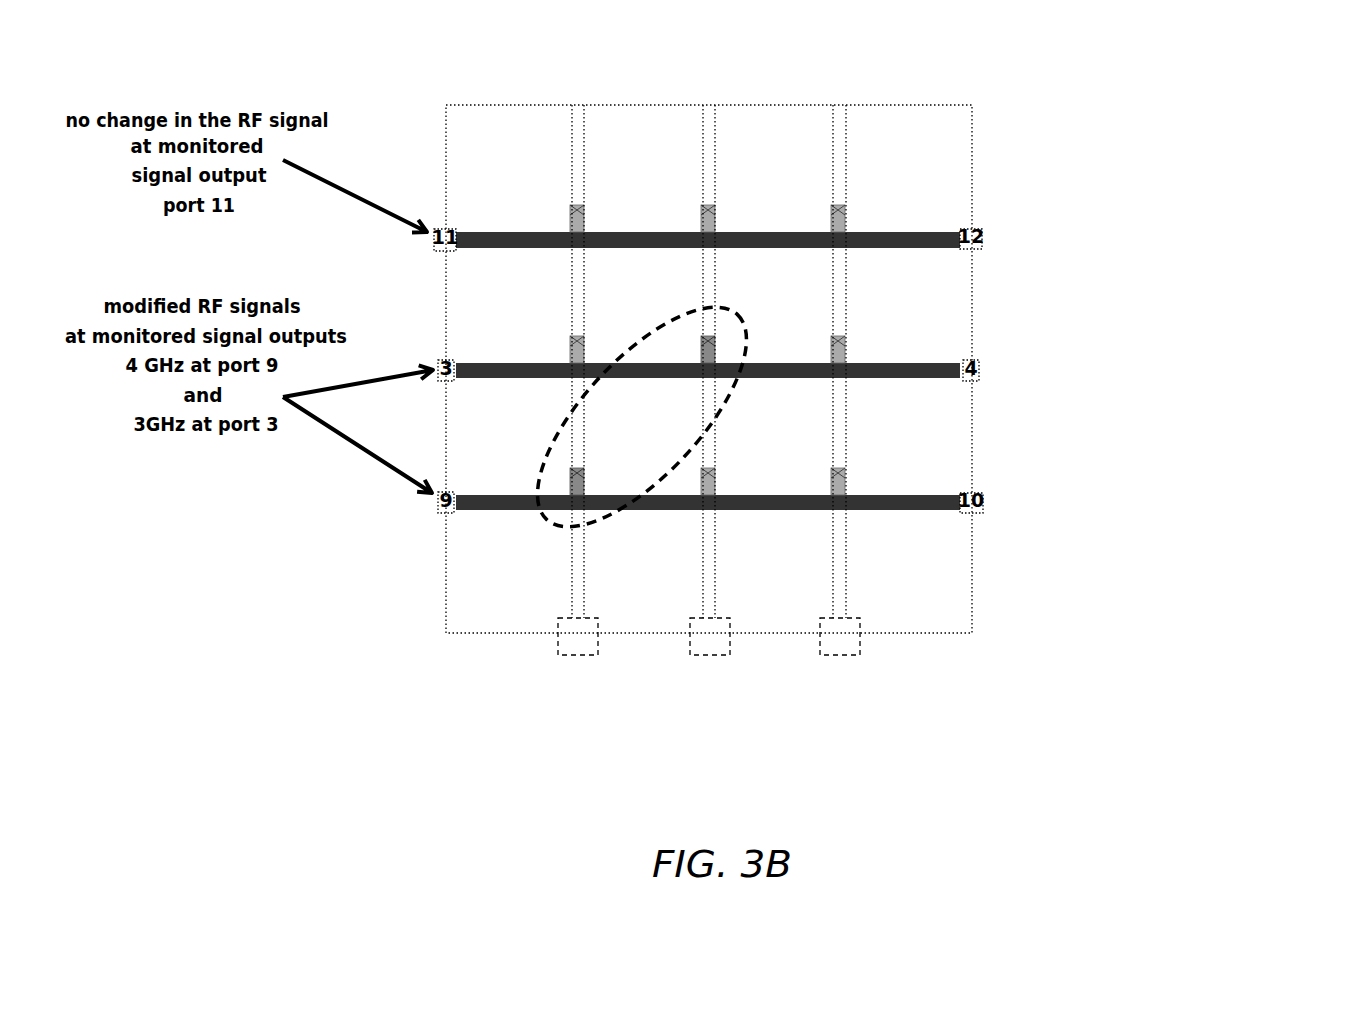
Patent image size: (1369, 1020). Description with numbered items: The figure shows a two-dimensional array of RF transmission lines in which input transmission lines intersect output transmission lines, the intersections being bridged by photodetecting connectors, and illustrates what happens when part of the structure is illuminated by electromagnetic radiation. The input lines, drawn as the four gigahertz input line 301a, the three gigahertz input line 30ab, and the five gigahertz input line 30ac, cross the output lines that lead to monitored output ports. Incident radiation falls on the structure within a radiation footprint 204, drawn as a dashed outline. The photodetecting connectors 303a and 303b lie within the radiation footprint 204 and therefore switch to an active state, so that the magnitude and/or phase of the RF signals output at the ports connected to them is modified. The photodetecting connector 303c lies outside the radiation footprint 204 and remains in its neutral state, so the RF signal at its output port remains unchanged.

The photodetecting connector 303a is at (567, 502).
The photodetecting connector 303b is at (725, 350).
The photodetecting connector 303c is at (863, 194).
The incident radiation footprint 204 is at (712, 428).
The 4 GHz input line 301a is at (573, 678).
The 3 GHz input line 30ab is at (719, 676).
The 5 GHz input line 30ac is at (860, 672).